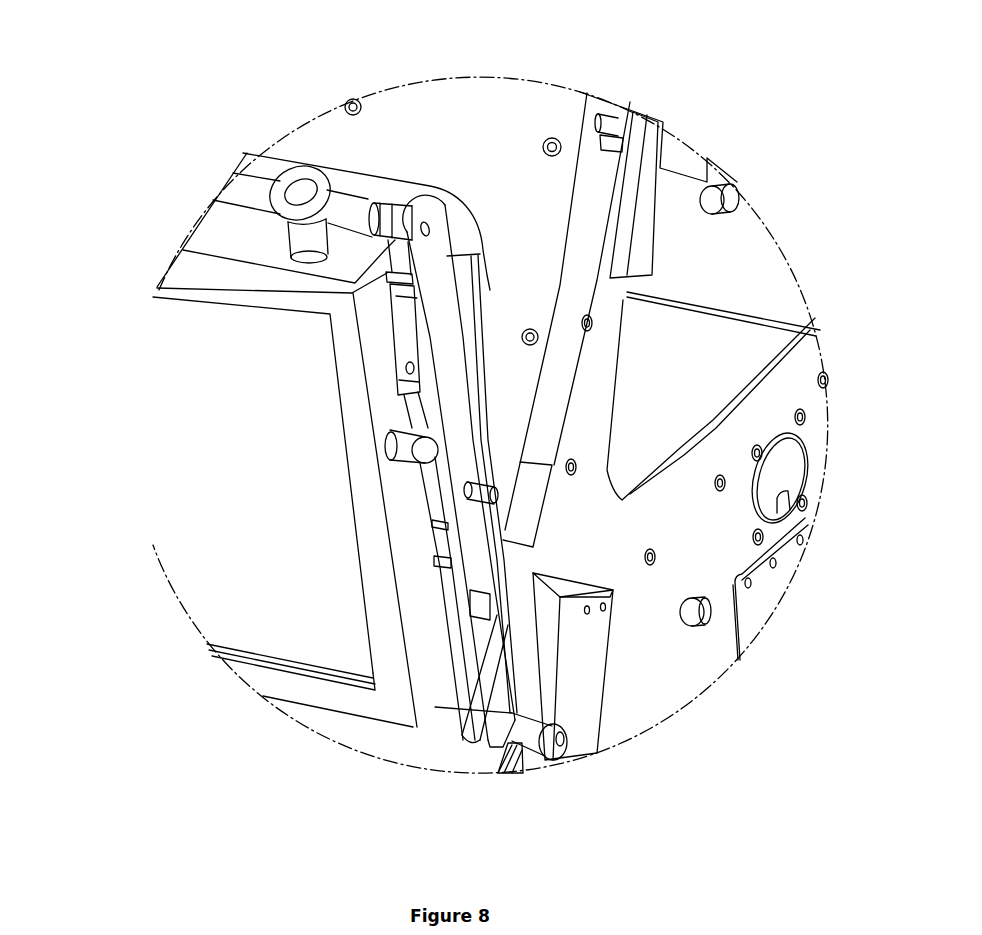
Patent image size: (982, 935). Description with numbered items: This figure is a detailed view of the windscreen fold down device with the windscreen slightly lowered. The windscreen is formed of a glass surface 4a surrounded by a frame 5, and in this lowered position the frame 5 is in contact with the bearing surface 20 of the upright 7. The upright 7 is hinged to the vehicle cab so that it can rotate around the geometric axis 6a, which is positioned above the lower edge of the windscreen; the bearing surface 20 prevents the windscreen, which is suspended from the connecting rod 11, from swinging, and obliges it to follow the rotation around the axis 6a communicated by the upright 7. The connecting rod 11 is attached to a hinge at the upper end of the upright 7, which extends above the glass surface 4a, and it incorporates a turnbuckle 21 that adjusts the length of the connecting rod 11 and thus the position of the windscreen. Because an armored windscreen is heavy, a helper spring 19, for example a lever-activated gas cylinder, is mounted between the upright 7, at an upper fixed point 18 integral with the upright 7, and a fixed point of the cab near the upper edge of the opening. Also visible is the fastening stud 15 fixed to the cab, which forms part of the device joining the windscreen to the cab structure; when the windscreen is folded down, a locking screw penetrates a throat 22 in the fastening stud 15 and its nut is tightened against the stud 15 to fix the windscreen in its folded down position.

The glass surface 4a is at (247, 580).
The frame 5 is at (474, 354).
The geometric axis 6a is at (567, 732).
The upright 7 is at (440, 292).
The connecting rod 11 is at (395, 245).
The fastening stud 15 is at (543, 687).
The upper fixed point 18 is at (500, 617).
The helper spring 19 is at (557, 381).
The bearing surface 20 is at (480, 441).
The turnbuckle 21 is at (395, 330).
The throat 22 is at (520, 776).